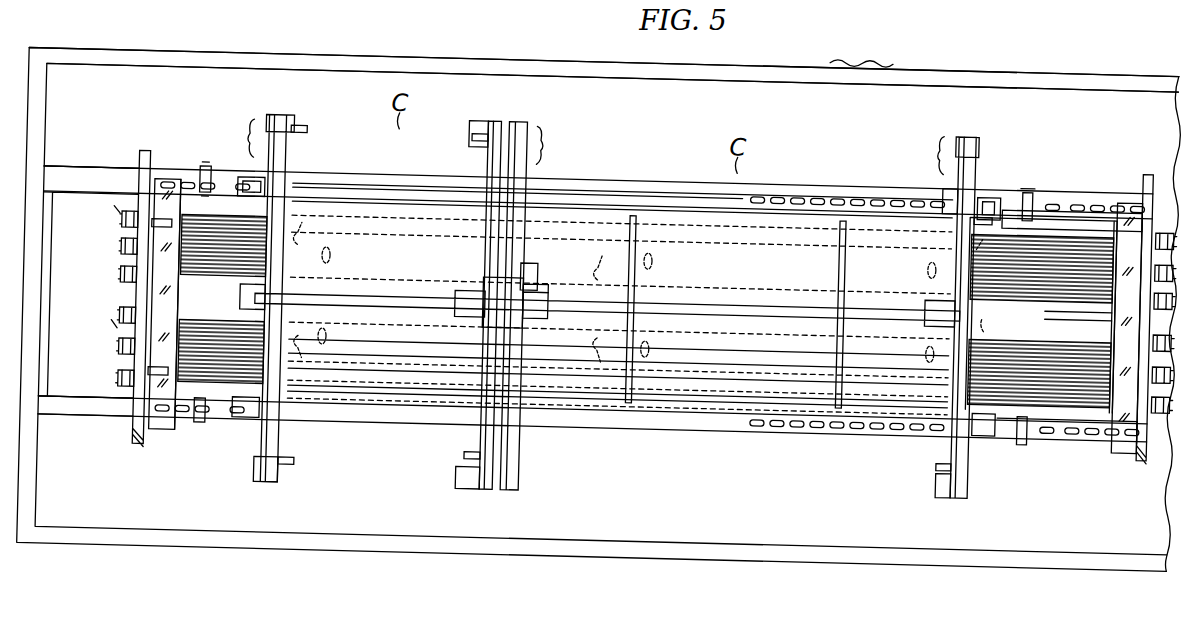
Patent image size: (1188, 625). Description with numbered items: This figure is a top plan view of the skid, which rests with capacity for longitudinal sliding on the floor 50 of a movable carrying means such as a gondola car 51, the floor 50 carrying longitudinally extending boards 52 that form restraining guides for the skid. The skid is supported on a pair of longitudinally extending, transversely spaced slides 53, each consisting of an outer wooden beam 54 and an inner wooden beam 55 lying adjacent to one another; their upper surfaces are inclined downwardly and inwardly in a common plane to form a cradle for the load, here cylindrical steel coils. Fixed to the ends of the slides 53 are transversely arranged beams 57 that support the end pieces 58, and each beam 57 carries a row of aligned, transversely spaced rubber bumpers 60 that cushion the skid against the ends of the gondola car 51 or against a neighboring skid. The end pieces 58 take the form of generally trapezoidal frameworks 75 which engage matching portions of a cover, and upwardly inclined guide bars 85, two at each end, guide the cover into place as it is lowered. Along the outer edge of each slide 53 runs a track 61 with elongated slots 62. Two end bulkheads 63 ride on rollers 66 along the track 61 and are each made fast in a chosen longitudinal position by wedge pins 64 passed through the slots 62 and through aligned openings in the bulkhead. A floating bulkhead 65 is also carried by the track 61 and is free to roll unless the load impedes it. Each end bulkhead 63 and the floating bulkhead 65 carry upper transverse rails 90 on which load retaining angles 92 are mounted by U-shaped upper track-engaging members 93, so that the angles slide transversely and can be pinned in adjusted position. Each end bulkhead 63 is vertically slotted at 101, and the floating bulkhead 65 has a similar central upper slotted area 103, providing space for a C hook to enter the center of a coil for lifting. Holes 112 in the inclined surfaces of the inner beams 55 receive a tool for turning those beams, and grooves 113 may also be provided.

The floor 50 is at (799, 84).
The gondola car 51 is at (862, 48).
The longitudinally extending boards 52 is at (90, 180).
The slide 53 is at (1062, 218).
The outer beam 54 is at (1075, 200).
The inner beam 55 is at (1076, 330).
The transversely arranged beam 57 is at (168, 306).
The end piece 58 is at (118, 307).
The bumpers 60 is at (118, 286).
The track 61 is at (136, 200).
The elongated slots 62 is at (218, 192).
The end bulkhead 63 is at (580, 146).
The wedge pin 64 is at (274, 197).
The floating bulkhead 65 is at (555, 145).
The rollers 66 is at (202, 183).
The trapezoidal framework 75 is at (150, 166).
The guide bar 85 is at (162, 240).
The upper transverse rail 90 is at (282, 171).
The load retaining angle 92 is at (302, 136).
The upper track-engaging member 93 is at (280, 136).
The slot 101 is at (270, 306).
The central upper slotted area 103 is at (484, 293).
The holes 112 is at (329, 265).
The grooves 113 is at (653, 304).